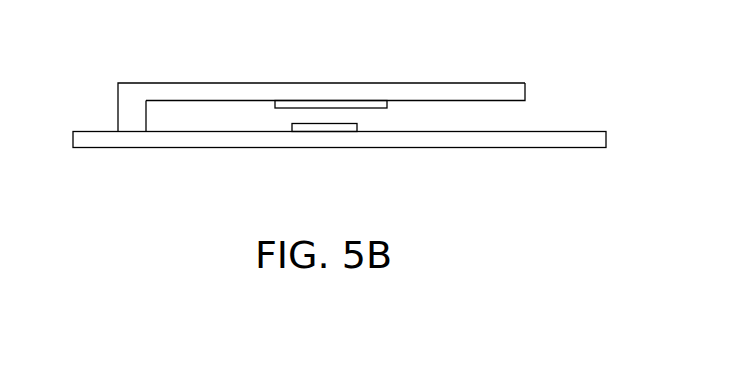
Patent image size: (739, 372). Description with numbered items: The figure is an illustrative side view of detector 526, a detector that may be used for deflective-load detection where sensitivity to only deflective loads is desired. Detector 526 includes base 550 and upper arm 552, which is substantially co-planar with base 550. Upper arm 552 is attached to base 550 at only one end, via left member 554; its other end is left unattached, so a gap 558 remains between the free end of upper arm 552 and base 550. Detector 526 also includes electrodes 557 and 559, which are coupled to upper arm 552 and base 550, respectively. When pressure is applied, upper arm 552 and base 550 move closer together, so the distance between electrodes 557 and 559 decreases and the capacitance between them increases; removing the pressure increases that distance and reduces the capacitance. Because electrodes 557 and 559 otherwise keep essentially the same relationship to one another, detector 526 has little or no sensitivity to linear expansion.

The detector 526 is at (138, 82).
The base 550 is at (478, 137).
The upper arm 552 is at (410, 93).
The left member 554 is at (118, 107).
The electrode 557 is at (325, 107).
The gap 558 is at (497, 114).
The electrode 559 is at (308, 127).